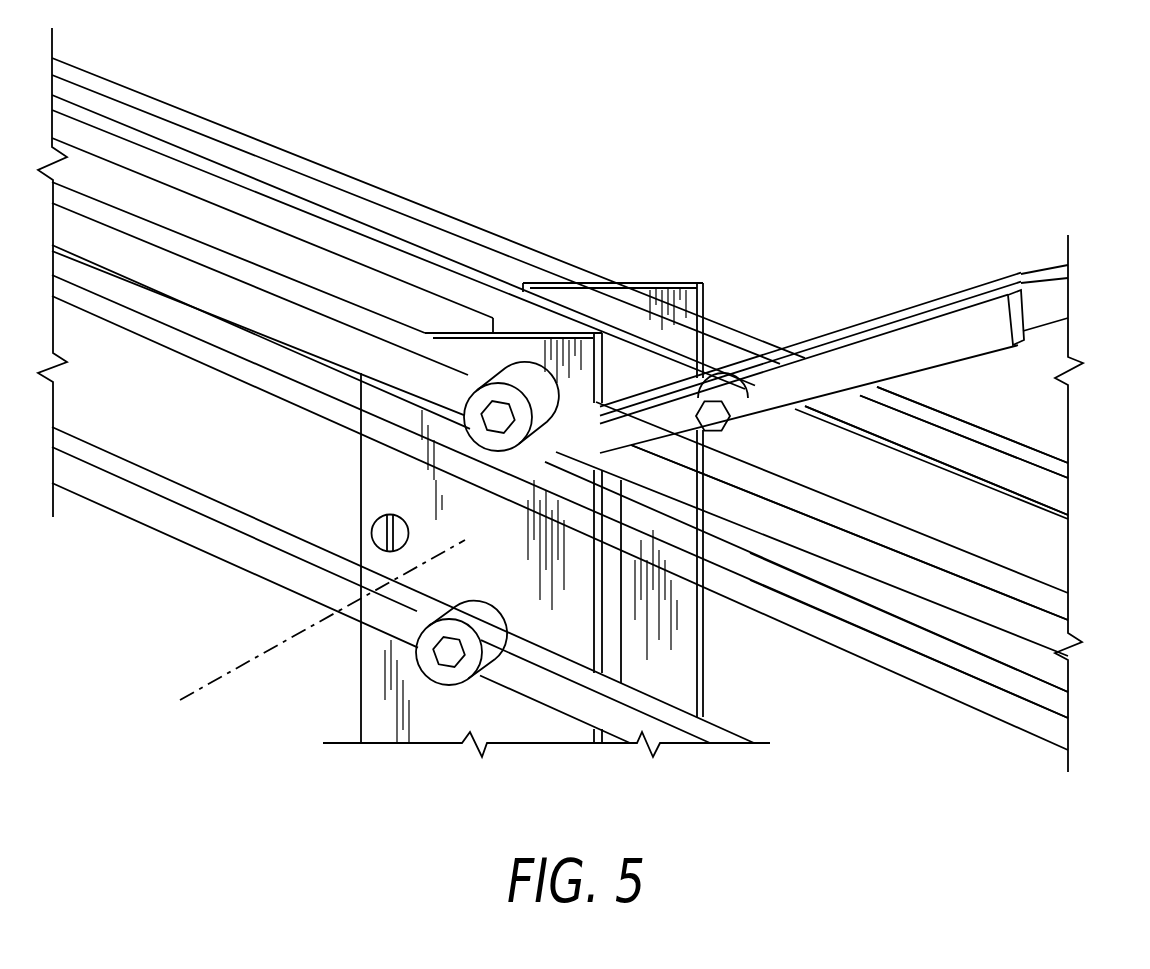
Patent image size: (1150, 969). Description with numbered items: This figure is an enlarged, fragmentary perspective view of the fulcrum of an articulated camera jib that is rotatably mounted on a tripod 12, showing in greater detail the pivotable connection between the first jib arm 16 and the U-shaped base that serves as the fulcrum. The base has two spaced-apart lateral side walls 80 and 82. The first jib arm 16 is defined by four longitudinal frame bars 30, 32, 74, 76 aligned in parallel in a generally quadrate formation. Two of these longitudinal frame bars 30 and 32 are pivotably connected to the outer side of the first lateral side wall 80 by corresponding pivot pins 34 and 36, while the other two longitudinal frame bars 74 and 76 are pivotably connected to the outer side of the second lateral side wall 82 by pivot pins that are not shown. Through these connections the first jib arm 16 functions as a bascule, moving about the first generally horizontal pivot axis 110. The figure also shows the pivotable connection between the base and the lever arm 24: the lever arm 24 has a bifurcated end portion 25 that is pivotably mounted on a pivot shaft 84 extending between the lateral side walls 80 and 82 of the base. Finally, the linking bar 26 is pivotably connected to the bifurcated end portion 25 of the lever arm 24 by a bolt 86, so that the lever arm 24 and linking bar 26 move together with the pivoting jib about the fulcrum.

The tripod 12 is at (380, 698).
The first jib arm 16 is at (418, 200).
The lever arm 24 is at (1040, 268).
The bifurcated end portion 25 is at (840, 335).
The linking bar 26 is at (258, 205).
The longitudinal frame bar 30 is at (555, 700).
The longitudinal frame bar 32 is at (1020, 585).
The pivot pin 34 is at (441, 660).
The pivot pin 36 is at (490, 410).
The longitudinal frame bar 74 is at (847, 638).
The longitudinal frame bar 76 is at (1020, 450).
The lateral side wall 80 is at (393, 458).
The lateral side wall 82 is at (633, 310).
The pivot shaft 84 is at (383, 533).
The bolt 86 is at (717, 420).
The first generally horizontal pivot axis 110 is at (247, 662).